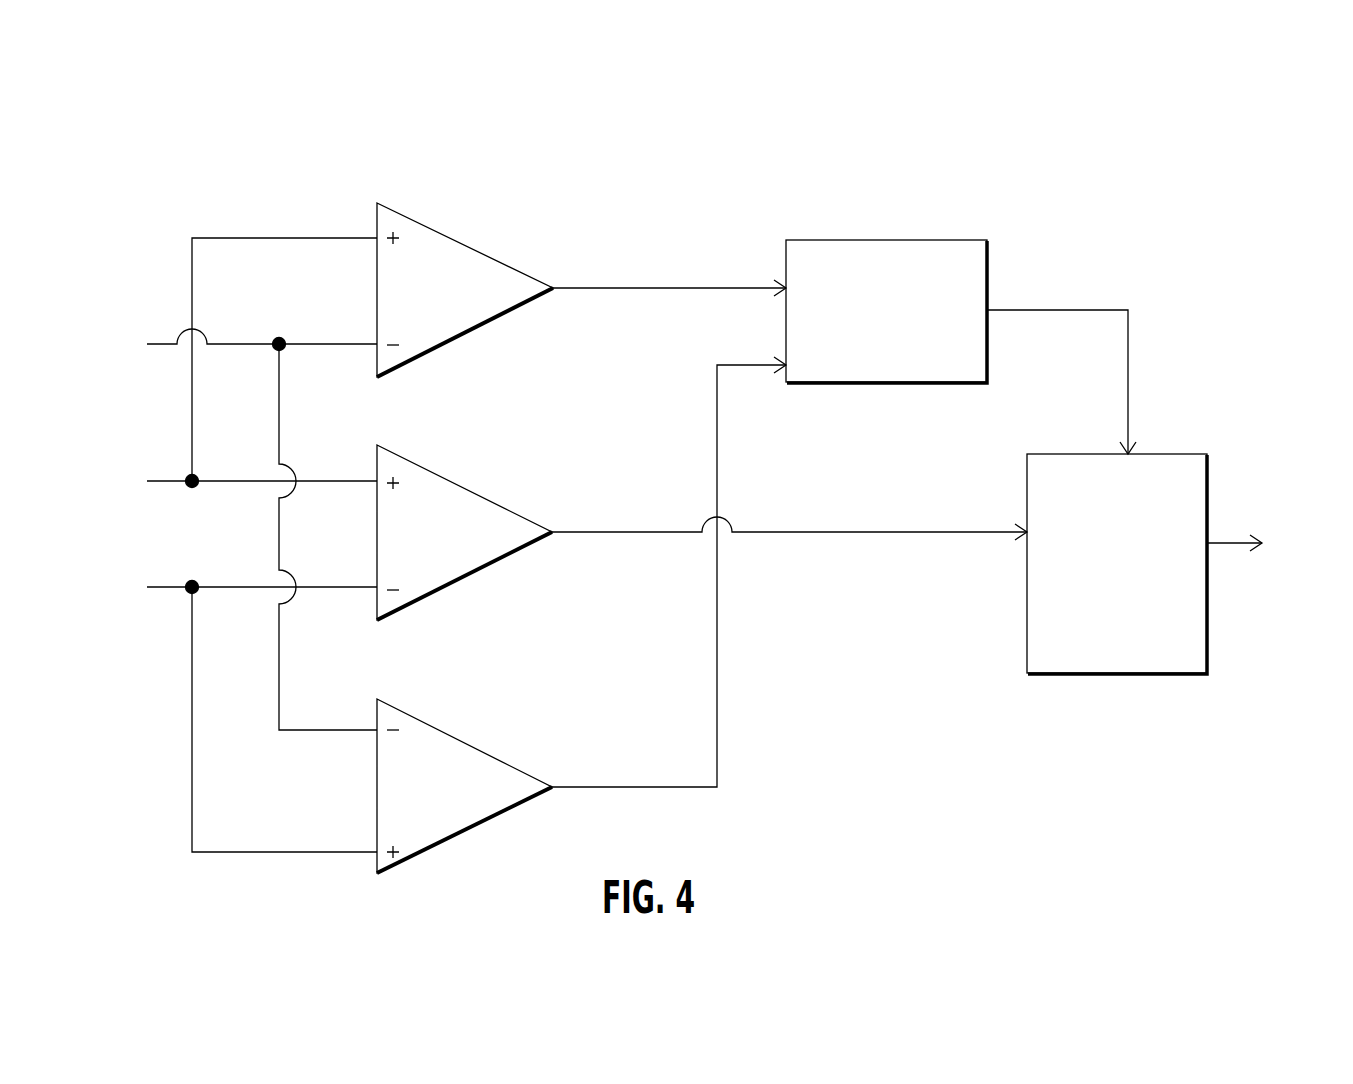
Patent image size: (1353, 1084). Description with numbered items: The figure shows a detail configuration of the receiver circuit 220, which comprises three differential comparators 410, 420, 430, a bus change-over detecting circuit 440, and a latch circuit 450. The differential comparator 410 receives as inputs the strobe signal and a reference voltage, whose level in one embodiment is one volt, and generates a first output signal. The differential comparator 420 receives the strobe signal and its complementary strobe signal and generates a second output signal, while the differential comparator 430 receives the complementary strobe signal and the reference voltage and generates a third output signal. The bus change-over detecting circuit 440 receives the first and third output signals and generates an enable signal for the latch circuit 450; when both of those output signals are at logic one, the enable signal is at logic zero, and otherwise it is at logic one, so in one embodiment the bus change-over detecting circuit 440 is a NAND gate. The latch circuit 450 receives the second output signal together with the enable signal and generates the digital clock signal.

The receiver circuit 220 is at (963, 185).
The differential comparator 410 is at (489, 258).
The differential comparator 420 is at (500, 507).
The differential comparator 430 is at (503, 763).
The bus change-over detecting circuit 440 is at (830, 240).
The latch circuit 450 is at (1027, 462).